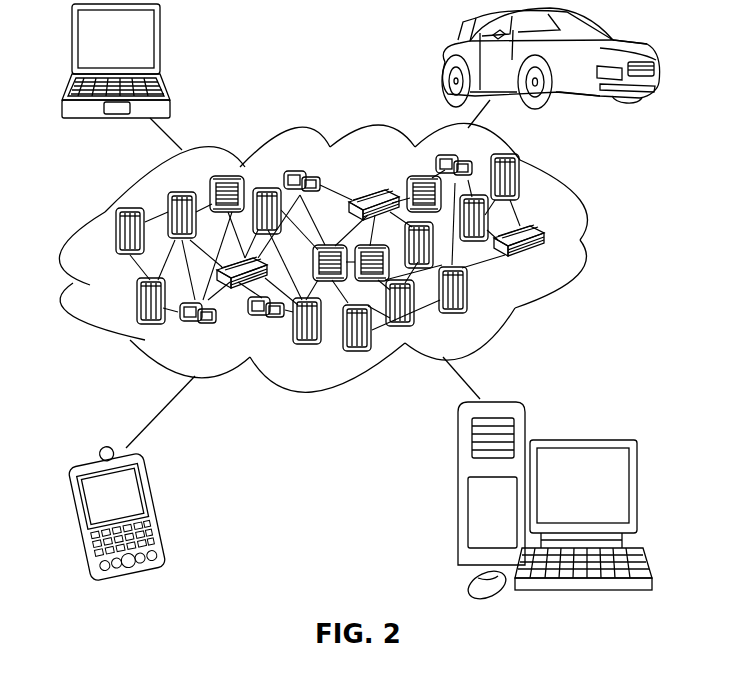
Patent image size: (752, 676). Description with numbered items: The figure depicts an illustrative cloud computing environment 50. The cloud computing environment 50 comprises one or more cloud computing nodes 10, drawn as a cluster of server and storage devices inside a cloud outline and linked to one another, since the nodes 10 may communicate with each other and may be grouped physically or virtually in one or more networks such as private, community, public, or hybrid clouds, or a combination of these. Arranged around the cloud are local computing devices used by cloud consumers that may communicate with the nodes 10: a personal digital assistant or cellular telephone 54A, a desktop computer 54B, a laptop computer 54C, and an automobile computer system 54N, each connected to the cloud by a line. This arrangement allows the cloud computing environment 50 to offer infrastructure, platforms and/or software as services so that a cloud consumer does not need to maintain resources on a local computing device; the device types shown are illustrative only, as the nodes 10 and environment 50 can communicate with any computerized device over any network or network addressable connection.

The cloud computing environment 50 is at (581, 242).
The cloud computing nodes 10 is at (544, 259).
The personal digital assistant or cellular telephone 54A is at (155, 508).
The desktop computer 54B is at (580, 440).
The laptop computer 54C is at (160, 48).
The automobile computer system 54N is at (445, 62).